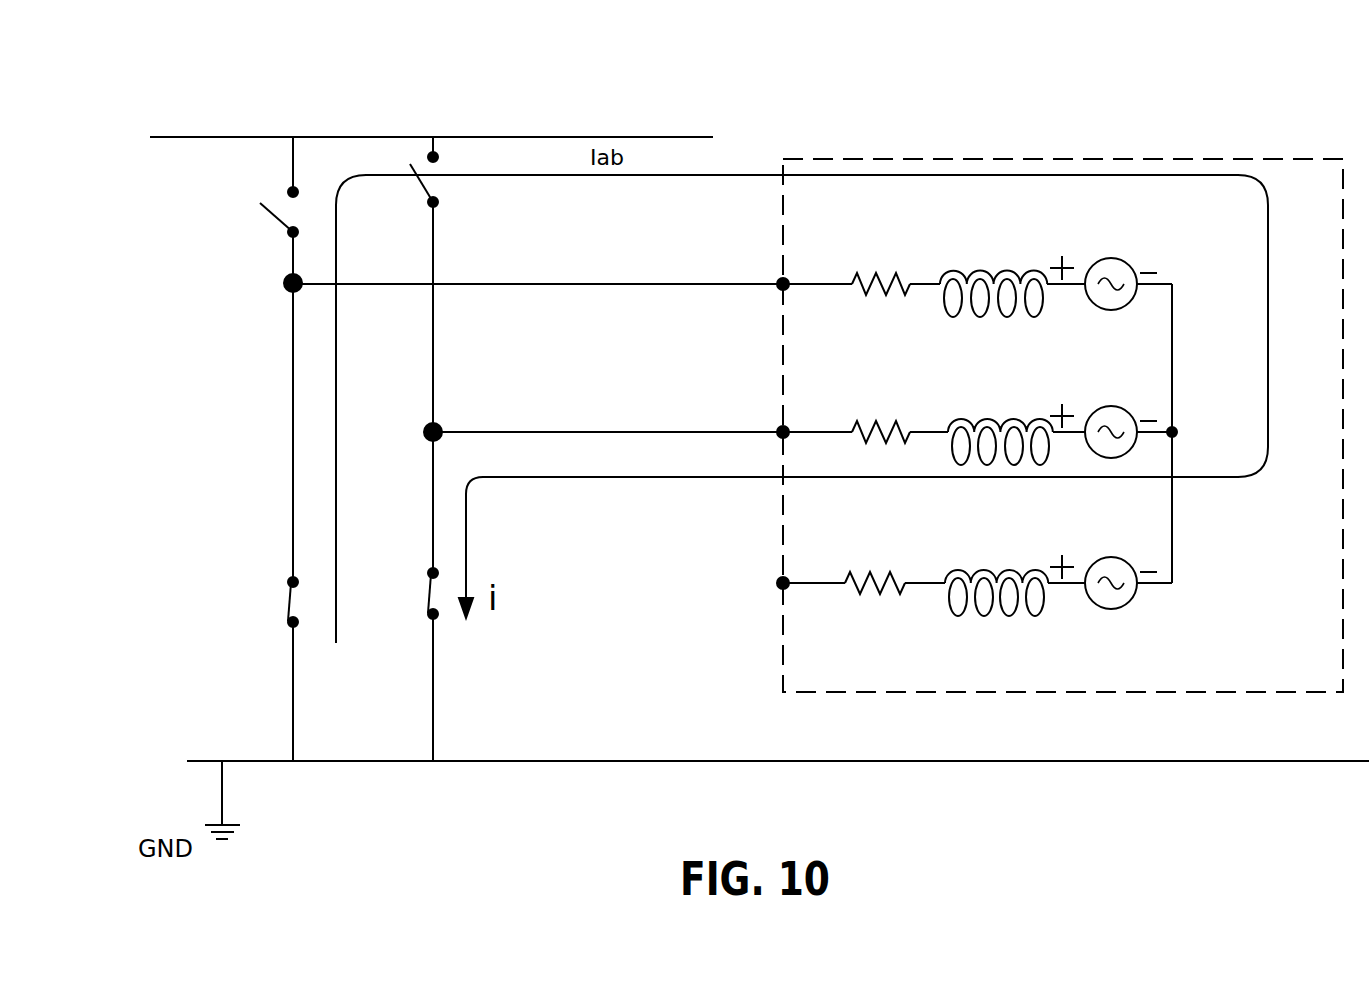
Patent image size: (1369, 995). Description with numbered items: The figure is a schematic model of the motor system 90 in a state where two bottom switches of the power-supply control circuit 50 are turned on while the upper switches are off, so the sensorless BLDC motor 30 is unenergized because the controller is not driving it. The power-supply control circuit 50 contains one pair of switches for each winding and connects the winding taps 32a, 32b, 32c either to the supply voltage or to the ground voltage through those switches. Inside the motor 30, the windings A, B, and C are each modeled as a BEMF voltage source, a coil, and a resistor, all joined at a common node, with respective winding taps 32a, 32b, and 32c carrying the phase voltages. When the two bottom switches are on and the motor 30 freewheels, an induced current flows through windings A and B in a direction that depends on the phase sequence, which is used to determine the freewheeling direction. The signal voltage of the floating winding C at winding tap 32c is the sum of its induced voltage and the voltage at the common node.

The motor system 90 is at (153, 67).
The power-supply control circuit 50 is at (408, 107).
The sensorless BLDC motor 30 is at (818, 383).
The winding tap 32a is at (777, 283).
The winding tap 32b is at (777, 432).
The winding tap 32c is at (777, 583).